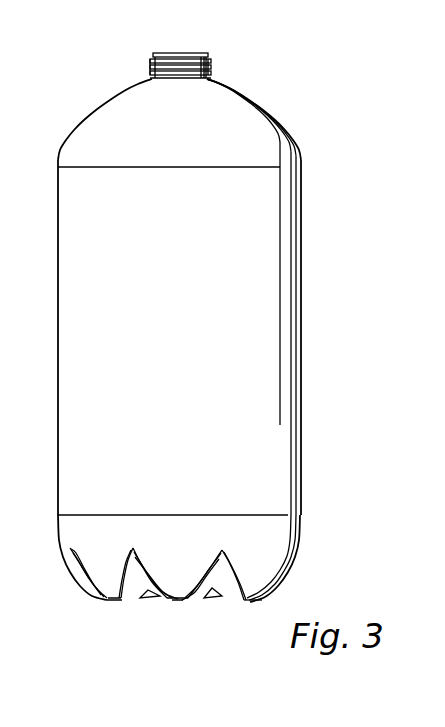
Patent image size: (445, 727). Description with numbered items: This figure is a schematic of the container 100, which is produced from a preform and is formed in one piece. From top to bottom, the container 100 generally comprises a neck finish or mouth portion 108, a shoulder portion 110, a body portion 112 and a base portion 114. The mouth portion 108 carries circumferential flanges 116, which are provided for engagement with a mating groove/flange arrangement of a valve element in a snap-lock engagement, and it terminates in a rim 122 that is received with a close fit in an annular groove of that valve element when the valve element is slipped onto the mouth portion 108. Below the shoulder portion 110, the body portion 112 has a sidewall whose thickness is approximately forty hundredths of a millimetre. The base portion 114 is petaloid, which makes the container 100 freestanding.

The container 100 is at (302, 232).
The neck finish or mouth portion 108 is at (213, 62).
The shoulder portion 110 is at (282, 110).
The body portion 112 is at (300, 362).
The base portion 114 is at (297, 558).
The circumferential flanges 116 is at (152, 67).
The rim 122 is at (205, 53).